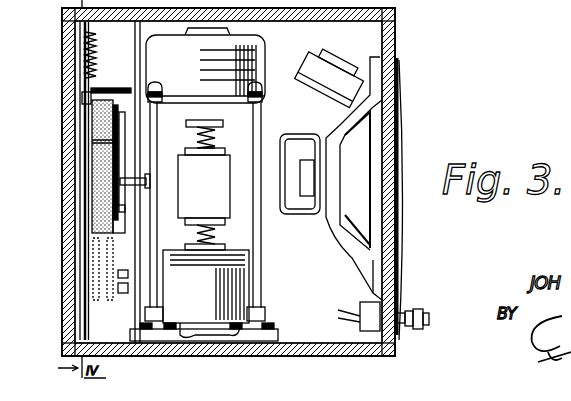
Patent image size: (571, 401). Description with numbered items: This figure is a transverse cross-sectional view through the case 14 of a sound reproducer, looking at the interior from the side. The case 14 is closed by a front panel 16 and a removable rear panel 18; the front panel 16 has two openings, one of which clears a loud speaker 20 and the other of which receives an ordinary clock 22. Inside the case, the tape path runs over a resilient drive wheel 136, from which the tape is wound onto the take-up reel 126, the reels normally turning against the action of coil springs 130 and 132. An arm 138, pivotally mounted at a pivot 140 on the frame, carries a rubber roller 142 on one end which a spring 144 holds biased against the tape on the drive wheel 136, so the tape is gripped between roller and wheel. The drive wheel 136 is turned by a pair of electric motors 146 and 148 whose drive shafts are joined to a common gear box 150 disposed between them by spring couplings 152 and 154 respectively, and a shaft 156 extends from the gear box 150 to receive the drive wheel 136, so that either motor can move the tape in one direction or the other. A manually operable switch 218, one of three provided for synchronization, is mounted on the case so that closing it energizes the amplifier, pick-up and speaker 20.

The case 14 is at (229, 182).
The front panel 16 is at (396, 295).
The removable rear panel 18 is at (66, 272).
The loud speaker 20 is at (356, 250).
The clock 22 is at (401, 118).
The take-up reel 126 is at (97, 300).
The coil spring 130 is at (128, 276).
The coil spring 132 is at (128, 291).
The drive wheel 136 is at (96, 178).
The arm 138 is at (84, 99).
The pivot 140 is at (107, 87).
The rubber roller 142 is at (88, 129).
The spring 144 is at (63, 54).
The electric motor 146 is at (262, 49).
The electric motor 148 is at (204, 350).
The gear box 150 is at (215, 162).
The spring coupling 152 is at (210, 132).
The spring coupling 154 is at (210, 233).
The shaft 156 is at (95, 265).
The manually operable switch 218 is at (429, 326).